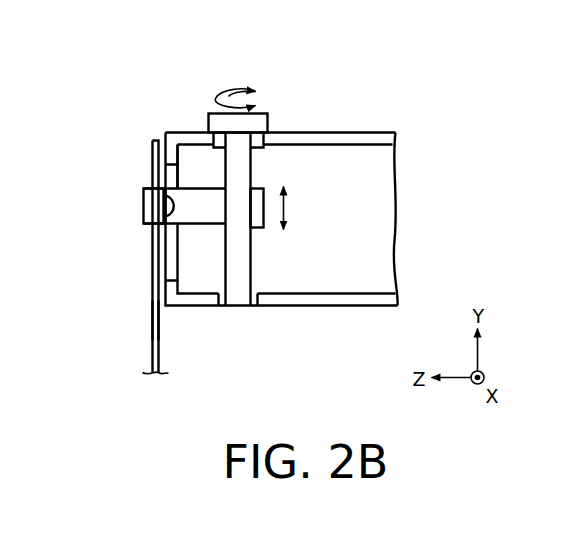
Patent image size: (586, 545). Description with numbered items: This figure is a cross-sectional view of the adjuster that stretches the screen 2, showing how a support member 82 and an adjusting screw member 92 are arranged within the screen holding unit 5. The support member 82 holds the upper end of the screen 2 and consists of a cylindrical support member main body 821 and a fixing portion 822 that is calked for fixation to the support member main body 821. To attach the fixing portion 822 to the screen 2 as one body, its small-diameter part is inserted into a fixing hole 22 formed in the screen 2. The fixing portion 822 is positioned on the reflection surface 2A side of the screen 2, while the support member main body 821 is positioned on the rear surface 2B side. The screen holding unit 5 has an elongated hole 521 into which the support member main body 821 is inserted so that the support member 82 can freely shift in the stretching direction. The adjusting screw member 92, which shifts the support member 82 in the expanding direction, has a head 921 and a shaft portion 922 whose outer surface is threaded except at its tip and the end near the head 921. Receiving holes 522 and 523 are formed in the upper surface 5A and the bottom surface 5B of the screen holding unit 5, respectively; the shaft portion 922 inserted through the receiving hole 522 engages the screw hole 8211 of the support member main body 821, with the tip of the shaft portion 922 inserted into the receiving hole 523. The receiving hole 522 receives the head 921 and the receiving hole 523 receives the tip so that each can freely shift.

The screen 2 is at (152, 151).
The reflection surface 2A is at (150, 337).
The rear surface 2B is at (160, 337).
The fixing hole 22 is at (151, 203).
The screen holding unit 5 is at (353, 132).
The upper surface 5A is at (385, 132).
The bottom surface 5B is at (383, 306).
The elongated hole 521 is at (177, 175).
The receiving hole 522 is at (265, 139).
The receiving hole 523 is at (262, 306).
The support member 82 is at (137, 221).
The support member main body 821 is at (205, 223).
The fixing portion 822 is at (143, 219).
The screw hole 8211 is at (250, 208).
The adjusting screw member 92 is at (272, 162).
The head 921 is at (261, 112).
The shaft portion 922 is at (250, 163).